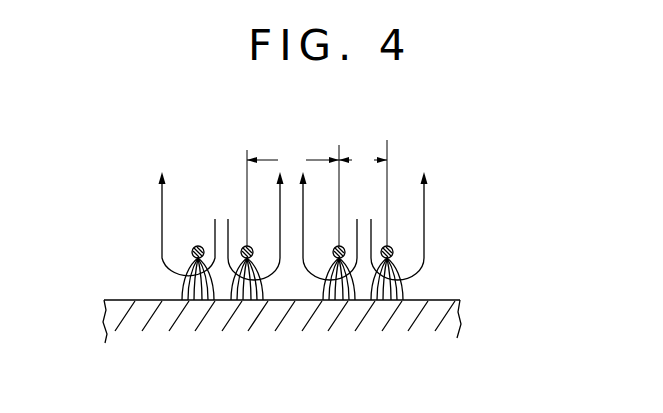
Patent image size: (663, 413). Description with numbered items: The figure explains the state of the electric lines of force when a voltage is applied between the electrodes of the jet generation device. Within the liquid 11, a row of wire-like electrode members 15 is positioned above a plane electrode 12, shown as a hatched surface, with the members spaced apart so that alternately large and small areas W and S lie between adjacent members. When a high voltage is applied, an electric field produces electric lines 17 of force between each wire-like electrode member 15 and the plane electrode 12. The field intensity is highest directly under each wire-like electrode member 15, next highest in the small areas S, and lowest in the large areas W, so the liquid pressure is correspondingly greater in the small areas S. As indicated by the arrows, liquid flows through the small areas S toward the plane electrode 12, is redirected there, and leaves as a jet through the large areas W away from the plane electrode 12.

The liquid 11 is at (474, 214).
The plane electrode 12 is at (134, 300).
The wire-like electrode members 15 is at (195, 246).
The electric lines of force 17 is at (266, 291).